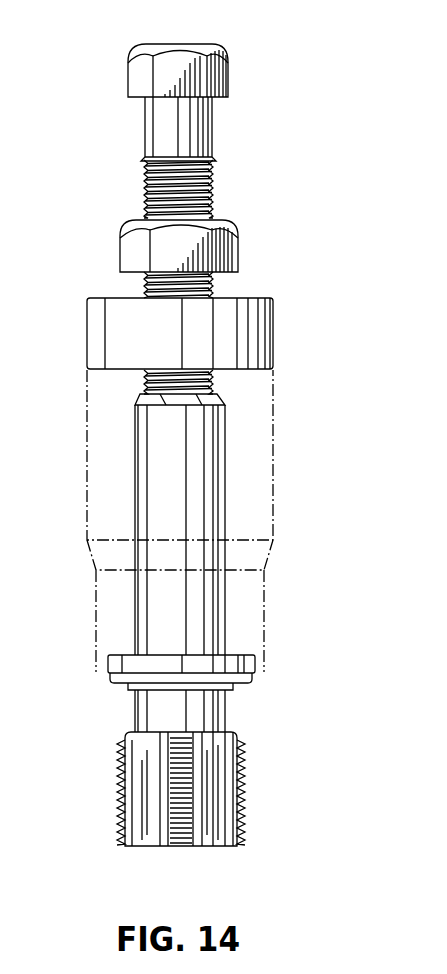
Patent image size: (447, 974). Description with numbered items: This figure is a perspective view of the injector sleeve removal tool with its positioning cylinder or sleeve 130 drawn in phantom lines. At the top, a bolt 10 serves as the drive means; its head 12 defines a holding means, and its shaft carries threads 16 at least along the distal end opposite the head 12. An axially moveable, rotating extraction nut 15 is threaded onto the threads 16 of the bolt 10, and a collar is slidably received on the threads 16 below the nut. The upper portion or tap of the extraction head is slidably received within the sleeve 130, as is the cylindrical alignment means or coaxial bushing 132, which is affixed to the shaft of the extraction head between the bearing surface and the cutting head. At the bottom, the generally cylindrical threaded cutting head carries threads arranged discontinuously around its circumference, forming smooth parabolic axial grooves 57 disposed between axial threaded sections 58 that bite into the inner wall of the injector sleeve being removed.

The head 12 is at (226, 50).
The bolt 10 is at (200, 130).
The threads 16 is at (210, 178).
The extraction nut 15 is at (227, 240).
The sleeve 130 is at (278, 513).
The coaxial bushing 132 is at (243, 656).
The axial grooves 57 is at (155, 803).
The axial threaded sections 58 is at (240, 797).